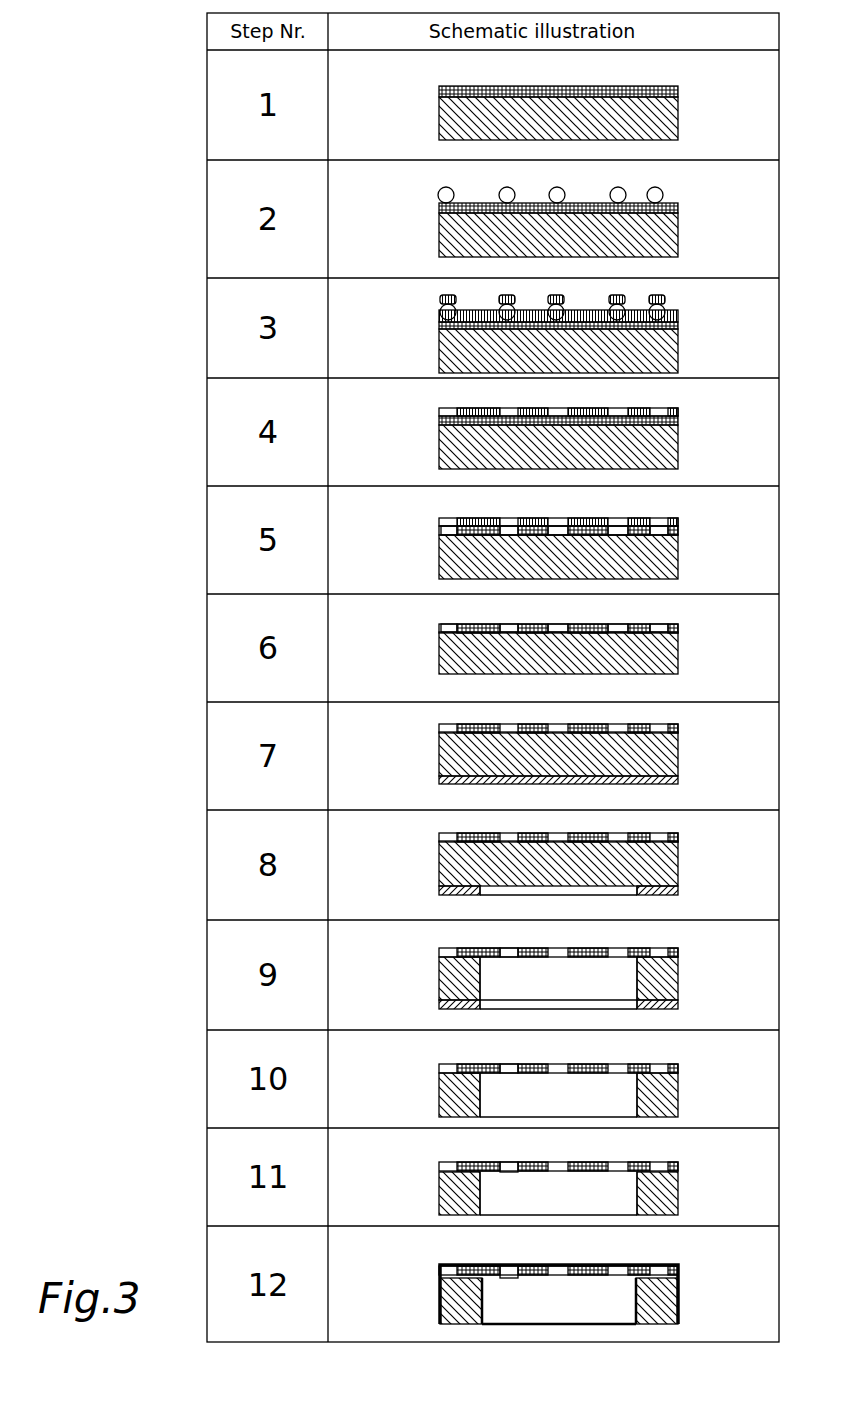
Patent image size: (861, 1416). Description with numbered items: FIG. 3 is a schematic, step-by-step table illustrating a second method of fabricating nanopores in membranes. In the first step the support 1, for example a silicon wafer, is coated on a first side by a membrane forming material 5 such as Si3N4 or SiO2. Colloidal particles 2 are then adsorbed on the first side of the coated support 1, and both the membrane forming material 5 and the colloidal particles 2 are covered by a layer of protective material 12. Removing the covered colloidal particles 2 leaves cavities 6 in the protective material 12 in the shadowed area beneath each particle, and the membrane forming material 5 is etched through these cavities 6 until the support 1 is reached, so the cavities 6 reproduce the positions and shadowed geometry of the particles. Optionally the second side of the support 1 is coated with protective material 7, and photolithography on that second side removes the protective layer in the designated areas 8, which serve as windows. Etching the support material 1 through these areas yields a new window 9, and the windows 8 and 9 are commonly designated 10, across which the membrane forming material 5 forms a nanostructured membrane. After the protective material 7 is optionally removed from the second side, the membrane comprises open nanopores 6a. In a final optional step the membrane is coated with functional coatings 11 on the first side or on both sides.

The support 1 is at (665, 112).
The colloidal particles 2 is at (654, 196).
The membrane forming material 5 is at (678, 92).
The cavities 6 is at (441, 410).
The pores 6a is at (513, 947).
The protective material 7 is at (665, 780).
The designated areas 8 is at (578, 890).
The window 9 is at (578, 988).
The windows 10 is at (563, 1103).
The functional coatings 11 is at (605, 1266).
The protective material 12 is at (667, 299).